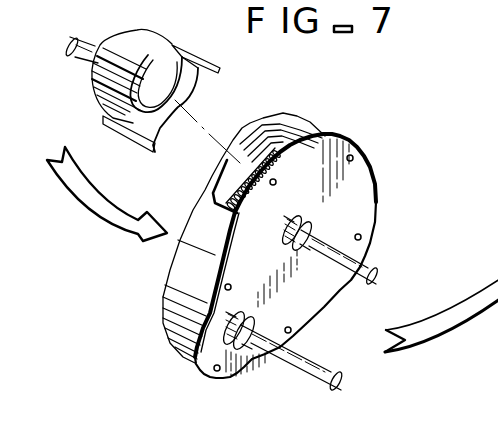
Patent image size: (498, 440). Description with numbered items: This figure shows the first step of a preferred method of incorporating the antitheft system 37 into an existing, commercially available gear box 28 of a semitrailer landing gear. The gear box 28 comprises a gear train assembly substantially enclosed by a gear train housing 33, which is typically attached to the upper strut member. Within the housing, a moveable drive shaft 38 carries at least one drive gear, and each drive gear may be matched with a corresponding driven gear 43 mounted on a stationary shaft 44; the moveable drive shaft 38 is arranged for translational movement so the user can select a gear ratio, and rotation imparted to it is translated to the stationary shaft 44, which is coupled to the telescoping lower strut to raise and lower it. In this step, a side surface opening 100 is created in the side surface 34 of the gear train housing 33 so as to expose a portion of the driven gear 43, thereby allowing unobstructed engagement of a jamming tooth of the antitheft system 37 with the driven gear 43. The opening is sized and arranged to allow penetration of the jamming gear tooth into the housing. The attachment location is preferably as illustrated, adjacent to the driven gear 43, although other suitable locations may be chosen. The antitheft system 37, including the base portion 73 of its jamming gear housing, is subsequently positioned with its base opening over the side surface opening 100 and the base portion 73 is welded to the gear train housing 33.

The gear box 28 is at (356, 120).
The side surface opening 100 is at (238, 157).
The driven gear 43 is at (215, 170).
The side surface 34 is at (186, 262).
The gear train housing 33 is at (167, 318).
The stationary shaft 44 is at (378, 282).
The moveable drive shaft 38 is at (340, 386).
The antitheft system 37 is at (80, 104).
The base portion 73 is at (218, 68).